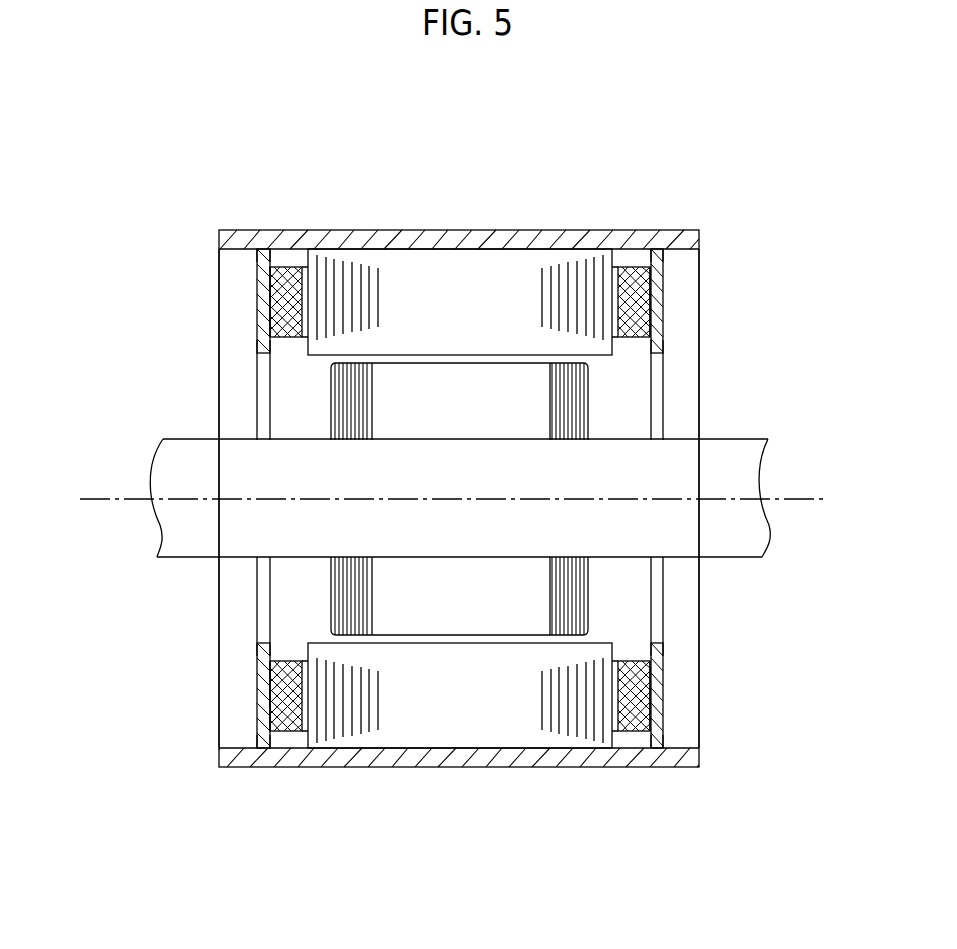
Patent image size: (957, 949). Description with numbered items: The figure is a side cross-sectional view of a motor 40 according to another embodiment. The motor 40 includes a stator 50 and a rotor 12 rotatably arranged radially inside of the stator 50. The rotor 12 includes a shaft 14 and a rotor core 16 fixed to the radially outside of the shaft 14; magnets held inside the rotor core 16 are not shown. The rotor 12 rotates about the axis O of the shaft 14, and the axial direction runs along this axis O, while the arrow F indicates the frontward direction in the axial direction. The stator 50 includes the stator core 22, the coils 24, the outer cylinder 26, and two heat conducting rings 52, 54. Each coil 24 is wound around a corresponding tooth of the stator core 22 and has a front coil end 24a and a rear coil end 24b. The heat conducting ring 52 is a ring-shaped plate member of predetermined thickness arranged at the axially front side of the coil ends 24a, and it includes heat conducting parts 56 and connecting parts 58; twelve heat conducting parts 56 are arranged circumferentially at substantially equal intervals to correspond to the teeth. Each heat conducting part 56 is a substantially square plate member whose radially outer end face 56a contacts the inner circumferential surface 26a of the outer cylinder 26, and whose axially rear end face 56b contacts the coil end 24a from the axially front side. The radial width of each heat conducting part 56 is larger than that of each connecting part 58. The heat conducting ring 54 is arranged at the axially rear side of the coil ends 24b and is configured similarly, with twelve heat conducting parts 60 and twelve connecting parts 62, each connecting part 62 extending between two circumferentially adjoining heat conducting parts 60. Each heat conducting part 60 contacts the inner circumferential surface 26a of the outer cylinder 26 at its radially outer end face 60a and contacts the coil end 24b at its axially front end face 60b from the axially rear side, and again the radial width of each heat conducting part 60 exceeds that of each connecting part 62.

The motor 40 is at (770, 80).
The stator 50 is at (638, 200).
The stator core 22 is at (427, 243).
The heat conducting ring 52 is at (244, 285).
The heat conducting ring 54 is at (673, 295).
The outer cylinder 26 is at (517, 248).
The inner circumferential surface 26a is at (480, 740).
The coil 24 is at (291, 266).
The coil end 24a is at (270, 311).
The coil end 24b is at (655, 310).
The heat conducting part 56 is at (257, 265).
The radially outer end face 56a is at (263, 249).
The axially rear end face 56b is at (270, 374).
The connecting part 58 is at (257, 382).
The heat conducting part 60 is at (658, 268).
The radially outer end face 60a is at (656, 256).
The axially front end face 60b is at (646, 358).
The connecting part 62 is at (658, 412).
The rotor 12 is at (111, 373).
The shaft 14 is at (196, 452).
The rotor core 16 is at (353, 410).
The axis O is at (780, 499).
The arrow F is at (143, 901).